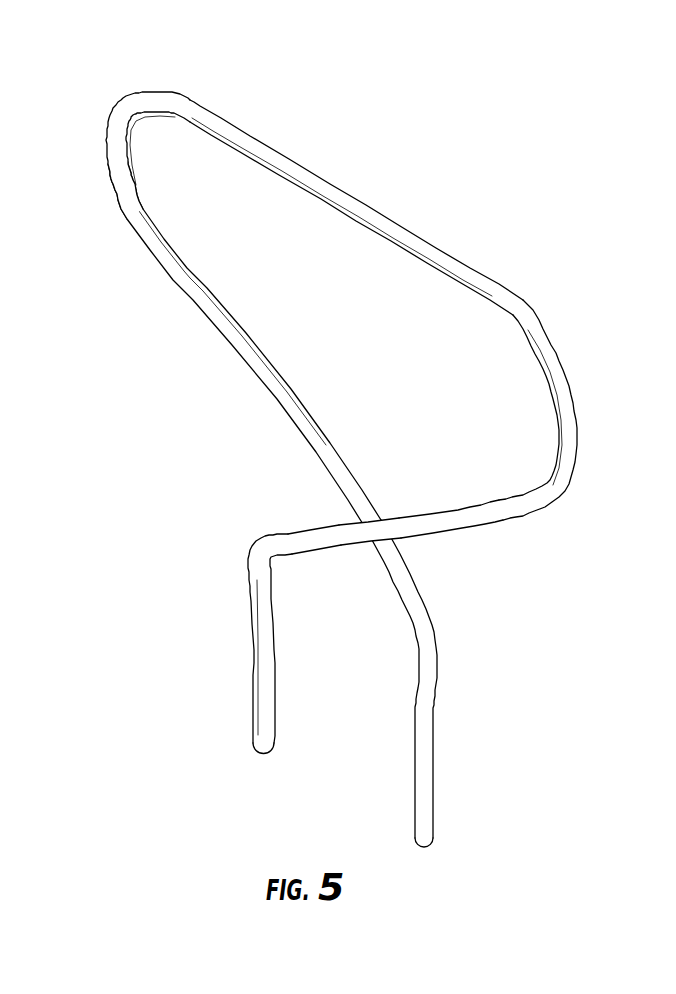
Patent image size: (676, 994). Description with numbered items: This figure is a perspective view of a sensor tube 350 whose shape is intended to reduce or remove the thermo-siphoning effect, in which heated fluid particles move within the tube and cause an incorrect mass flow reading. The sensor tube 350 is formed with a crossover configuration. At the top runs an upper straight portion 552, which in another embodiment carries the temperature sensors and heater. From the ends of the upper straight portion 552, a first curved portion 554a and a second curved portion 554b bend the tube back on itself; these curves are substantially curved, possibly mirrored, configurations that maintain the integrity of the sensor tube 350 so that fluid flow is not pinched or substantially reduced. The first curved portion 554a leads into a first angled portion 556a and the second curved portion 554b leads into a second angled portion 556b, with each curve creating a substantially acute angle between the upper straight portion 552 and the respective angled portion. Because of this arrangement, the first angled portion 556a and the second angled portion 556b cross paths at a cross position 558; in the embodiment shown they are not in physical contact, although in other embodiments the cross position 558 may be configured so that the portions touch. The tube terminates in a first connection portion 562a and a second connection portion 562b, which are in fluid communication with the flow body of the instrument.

The sensor tube 350 is at (363, 443).
The upper straight portion 552 is at (398, 213).
The first curved portion 554a is at (587, 452).
The second curved portion 554b is at (117, 114).
The first angled portion 556a is at (395, 503).
The second angled portion 556b is at (258, 324).
The cross position 558 is at (387, 512).
The first connection portion 562a is at (246, 749).
The second connection portion 562b is at (439, 846).